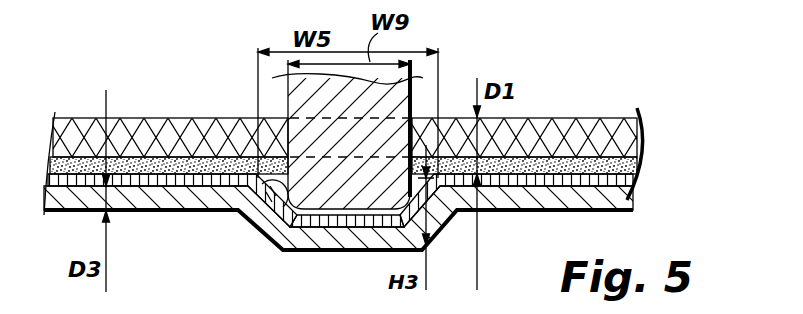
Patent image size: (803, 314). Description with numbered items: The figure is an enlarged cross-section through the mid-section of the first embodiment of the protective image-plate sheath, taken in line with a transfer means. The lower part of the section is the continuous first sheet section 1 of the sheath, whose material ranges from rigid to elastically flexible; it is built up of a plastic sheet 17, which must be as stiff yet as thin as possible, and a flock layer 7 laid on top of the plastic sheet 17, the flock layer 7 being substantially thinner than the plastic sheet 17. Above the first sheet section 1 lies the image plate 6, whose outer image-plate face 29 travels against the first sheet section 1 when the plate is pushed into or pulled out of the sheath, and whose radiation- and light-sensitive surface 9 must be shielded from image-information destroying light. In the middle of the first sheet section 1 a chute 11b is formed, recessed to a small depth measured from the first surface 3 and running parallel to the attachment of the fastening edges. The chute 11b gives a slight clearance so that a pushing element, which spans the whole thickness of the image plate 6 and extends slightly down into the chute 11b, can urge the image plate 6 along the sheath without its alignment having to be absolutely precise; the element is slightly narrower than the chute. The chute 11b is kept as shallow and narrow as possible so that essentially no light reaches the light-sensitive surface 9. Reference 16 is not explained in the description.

The first sheet section 1 is at (638, 192).
The first surface 3 is at (547, 155).
The image plate 6 is at (600, 113).
The flock layer 7 is at (270, 222).
The radiation- and light-sensitive surface 9 is at (640, 157).
The chute 11b is at (328, 215).
The conductive layer 16 is at (570, 178).
The plastic sheet 17 is at (176, 212).
The outer image-plate face 29 is at (172, 179).